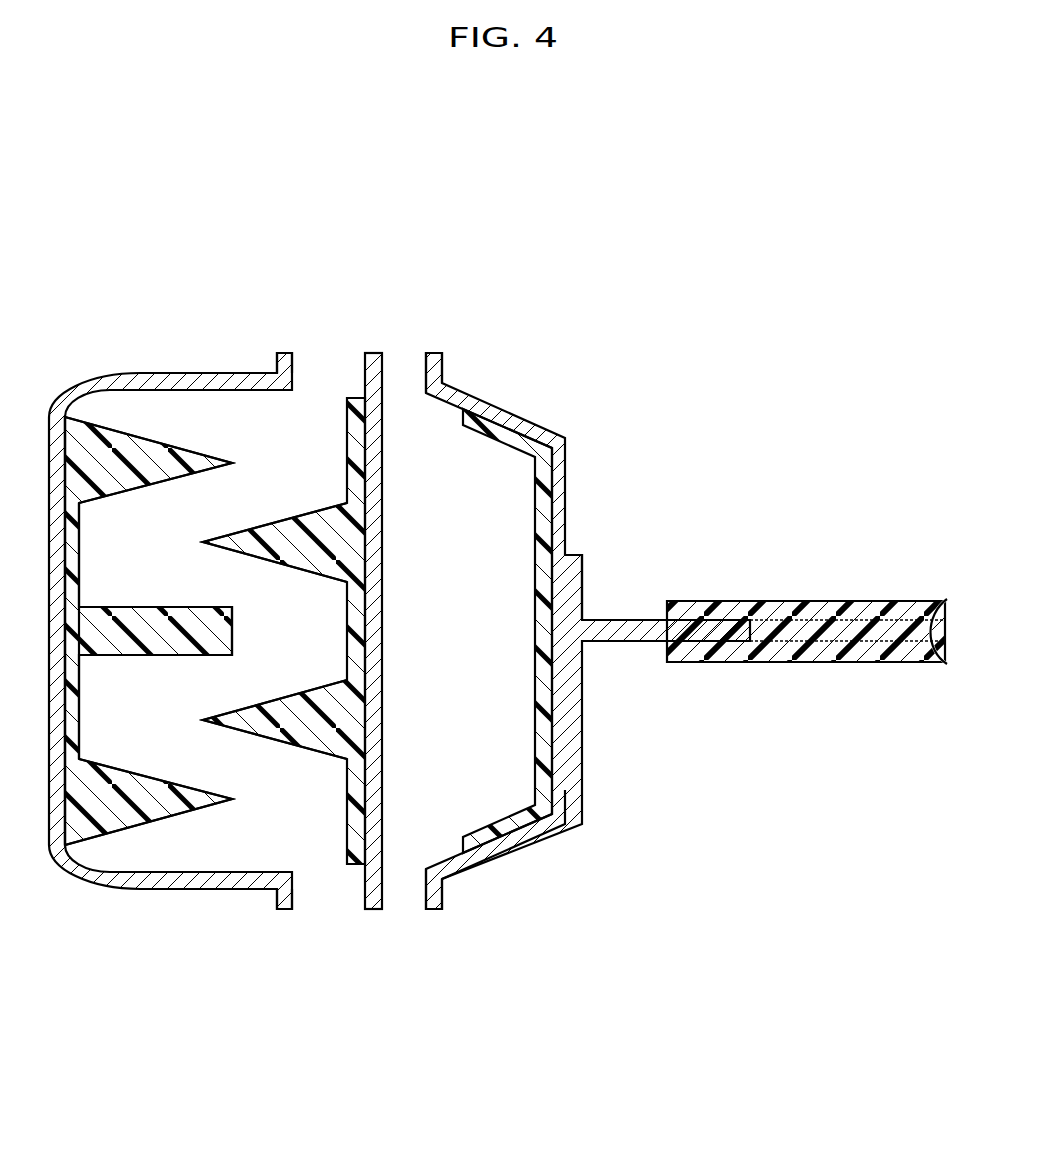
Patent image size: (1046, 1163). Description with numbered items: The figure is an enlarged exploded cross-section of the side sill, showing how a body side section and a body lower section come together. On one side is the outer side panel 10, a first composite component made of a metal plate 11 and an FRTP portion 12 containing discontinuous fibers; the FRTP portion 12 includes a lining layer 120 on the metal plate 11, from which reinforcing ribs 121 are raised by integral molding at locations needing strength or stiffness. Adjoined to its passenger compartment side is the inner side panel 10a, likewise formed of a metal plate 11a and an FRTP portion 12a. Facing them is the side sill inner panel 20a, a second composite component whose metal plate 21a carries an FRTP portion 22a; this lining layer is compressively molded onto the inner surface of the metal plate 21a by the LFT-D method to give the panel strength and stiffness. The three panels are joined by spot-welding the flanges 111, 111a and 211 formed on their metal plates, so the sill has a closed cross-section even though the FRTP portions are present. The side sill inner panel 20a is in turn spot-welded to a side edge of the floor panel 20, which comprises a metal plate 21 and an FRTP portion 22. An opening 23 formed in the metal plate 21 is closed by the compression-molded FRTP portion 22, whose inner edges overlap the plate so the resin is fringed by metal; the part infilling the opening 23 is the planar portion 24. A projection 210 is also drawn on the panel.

The outer side panel 10 is at (342, 258).
The metal plate 11 is at (220, 372).
The flange 111 is at (284, 352).
The flange 111a is at (374, 352).
The metal plate 11a is at (384, 488).
The FRTP portion 12a is at (364, 554).
The inner side panel 10a is at (462, 485).
The FRTP portion 12 is at (112, 833).
The lining layer 120 is at (80, 697).
The ribs 121 is at (152, 473).
The floor panel 20 is at (741, 492).
The metal plate 21 is at (630, 619).
The projection 210 is at (573, 553).
The flange 211 is at (443, 358).
The FRTP portion 22 is at (850, 663).
The FRTP portion 22a is at (556, 768).
The metal plate 21a is at (557, 829).
The side sill inner panel 20a is at (653, 760).
The opening 23 is at (840, 600).
The planar portion 24 is at (907, 600).